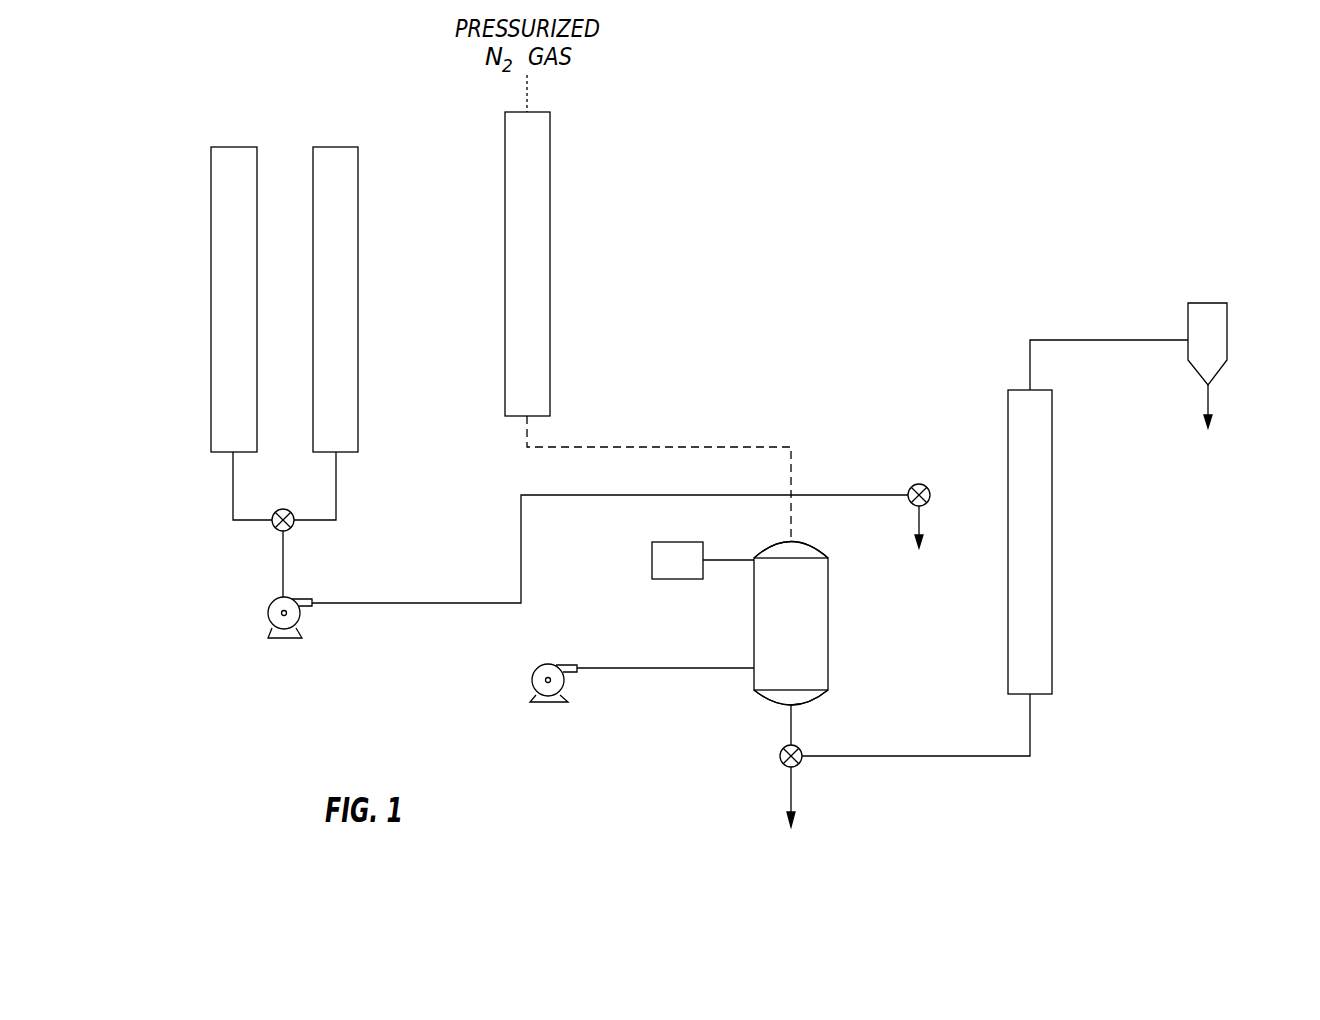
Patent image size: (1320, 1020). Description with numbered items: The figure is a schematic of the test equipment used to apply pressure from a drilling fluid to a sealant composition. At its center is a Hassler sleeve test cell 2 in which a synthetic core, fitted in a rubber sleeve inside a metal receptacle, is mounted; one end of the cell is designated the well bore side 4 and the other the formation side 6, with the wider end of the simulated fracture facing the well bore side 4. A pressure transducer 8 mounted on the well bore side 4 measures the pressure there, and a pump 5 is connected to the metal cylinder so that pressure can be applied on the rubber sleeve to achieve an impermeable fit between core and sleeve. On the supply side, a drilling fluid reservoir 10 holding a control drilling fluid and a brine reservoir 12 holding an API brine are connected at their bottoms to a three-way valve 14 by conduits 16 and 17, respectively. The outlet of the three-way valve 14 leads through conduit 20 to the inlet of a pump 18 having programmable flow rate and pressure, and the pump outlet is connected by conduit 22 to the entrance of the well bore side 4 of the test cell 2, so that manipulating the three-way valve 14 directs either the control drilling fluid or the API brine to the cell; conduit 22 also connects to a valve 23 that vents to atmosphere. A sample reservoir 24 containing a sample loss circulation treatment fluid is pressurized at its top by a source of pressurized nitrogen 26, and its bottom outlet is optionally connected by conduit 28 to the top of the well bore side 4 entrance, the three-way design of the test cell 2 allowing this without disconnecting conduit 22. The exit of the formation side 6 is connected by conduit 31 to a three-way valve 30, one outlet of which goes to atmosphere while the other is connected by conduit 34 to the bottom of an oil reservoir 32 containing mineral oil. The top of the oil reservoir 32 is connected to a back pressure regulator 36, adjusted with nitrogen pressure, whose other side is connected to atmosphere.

The Hassler sleeve test cell 2 is at (799, 628).
The well bore side 4 is at (778, 542).
The pump 5 is at (532, 672).
The formation side 6 is at (818, 700).
The pressure transducer 8 is at (660, 579).
The drilling fluid reservoir 10 is at (211, 200).
The brine reservoir 12 is at (358, 213).
The three-way valve 14 is at (275, 528).
The conduit 16 is at (233, 480).
The conduit 17 is at (336, 500).
The pump 18 is at (268, 612).
The conduit 20 is at (285, 577).
The conduit 22 is at (542, 495).
The valve 23 is at (919, 484).
The sample reservoir 24 is at (550, 250).
The source of pressurized nitrogen 26 is at (535, 86).
The conduit 28 is at (660, 447).
The three-way valve 30 is at (778, 765).
The conduit 31 is at (788, 727).
The oil reservoir 32 is at (1052, 620).
The conduit 34 is at (942, 757).
The back pressure regulator 36 is at (1227, 330).